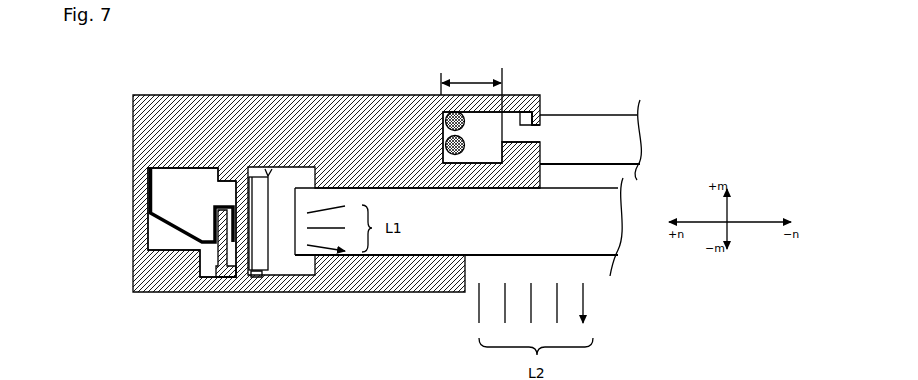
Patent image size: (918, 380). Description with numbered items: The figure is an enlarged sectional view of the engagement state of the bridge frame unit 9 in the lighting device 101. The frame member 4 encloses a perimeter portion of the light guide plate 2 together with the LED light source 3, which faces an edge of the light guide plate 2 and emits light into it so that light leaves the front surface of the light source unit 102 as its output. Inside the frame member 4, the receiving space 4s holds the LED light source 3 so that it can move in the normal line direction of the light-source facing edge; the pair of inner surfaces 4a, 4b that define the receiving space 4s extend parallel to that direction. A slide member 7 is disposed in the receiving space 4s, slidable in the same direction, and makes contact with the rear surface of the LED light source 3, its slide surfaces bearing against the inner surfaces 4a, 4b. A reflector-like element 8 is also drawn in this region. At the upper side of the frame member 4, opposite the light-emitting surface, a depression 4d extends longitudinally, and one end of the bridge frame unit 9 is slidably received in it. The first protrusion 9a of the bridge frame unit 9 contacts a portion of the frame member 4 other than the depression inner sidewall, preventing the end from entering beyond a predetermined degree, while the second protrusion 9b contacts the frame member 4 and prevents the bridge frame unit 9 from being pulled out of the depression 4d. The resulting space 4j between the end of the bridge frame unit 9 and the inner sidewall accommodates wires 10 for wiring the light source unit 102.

The light guide plate 2 is at (506, 239).
The LED light source 3 is at (274, 270).
The frame member 4 is at (533, 97).
The inner surface 4a is at (254, 278).
The inner surface 4b is at (268, 172).
The depression 4d is at (499, 145).
The space 4j is at (471, 103).
The receiving space 4s is at (193, 202).
The slide member 7 is at (212, 280).
The reflector sheet 8 is at (152, 232).
The bridge frame unit 9 is at (598, 108).
The first protrusion 9a is at (541, 113).
The second protrusion 9b is at (531, 110).
The wires 10 is at (446, 144).
The lighting device 101 is at (178, 300).
The light source unit 102 is at (593, 266).